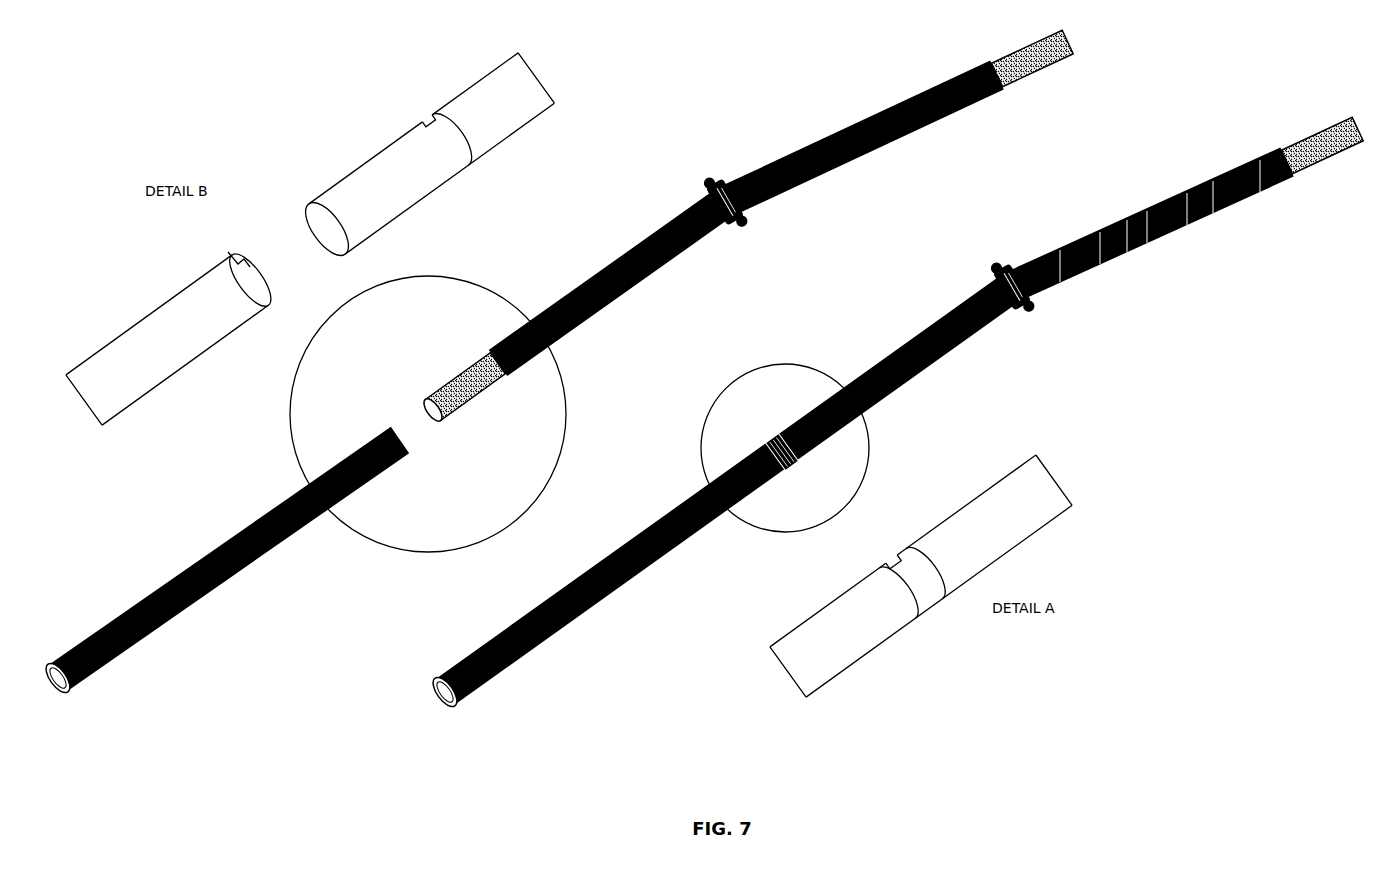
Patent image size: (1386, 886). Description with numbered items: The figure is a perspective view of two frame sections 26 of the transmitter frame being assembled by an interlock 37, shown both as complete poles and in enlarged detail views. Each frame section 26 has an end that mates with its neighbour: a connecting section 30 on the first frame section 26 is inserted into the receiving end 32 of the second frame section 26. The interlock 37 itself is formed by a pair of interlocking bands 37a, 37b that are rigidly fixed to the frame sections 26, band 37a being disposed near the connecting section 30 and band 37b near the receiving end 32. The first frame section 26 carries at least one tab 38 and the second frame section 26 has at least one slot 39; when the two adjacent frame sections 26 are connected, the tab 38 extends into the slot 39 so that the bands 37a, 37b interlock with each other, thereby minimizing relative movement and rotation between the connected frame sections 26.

The frame section 26 is at (200, 598).
The connecting section 30 is at (433, 195).
The receiving end 32 is at (208, 352).
The interlock 37 is at (380, 543).
The interlocking band 37a is at (907, 593).
The interlocking band 37b is at (940, 562).
The tab 38 is at (443, 127).
The slot 39 is at (245, 263).